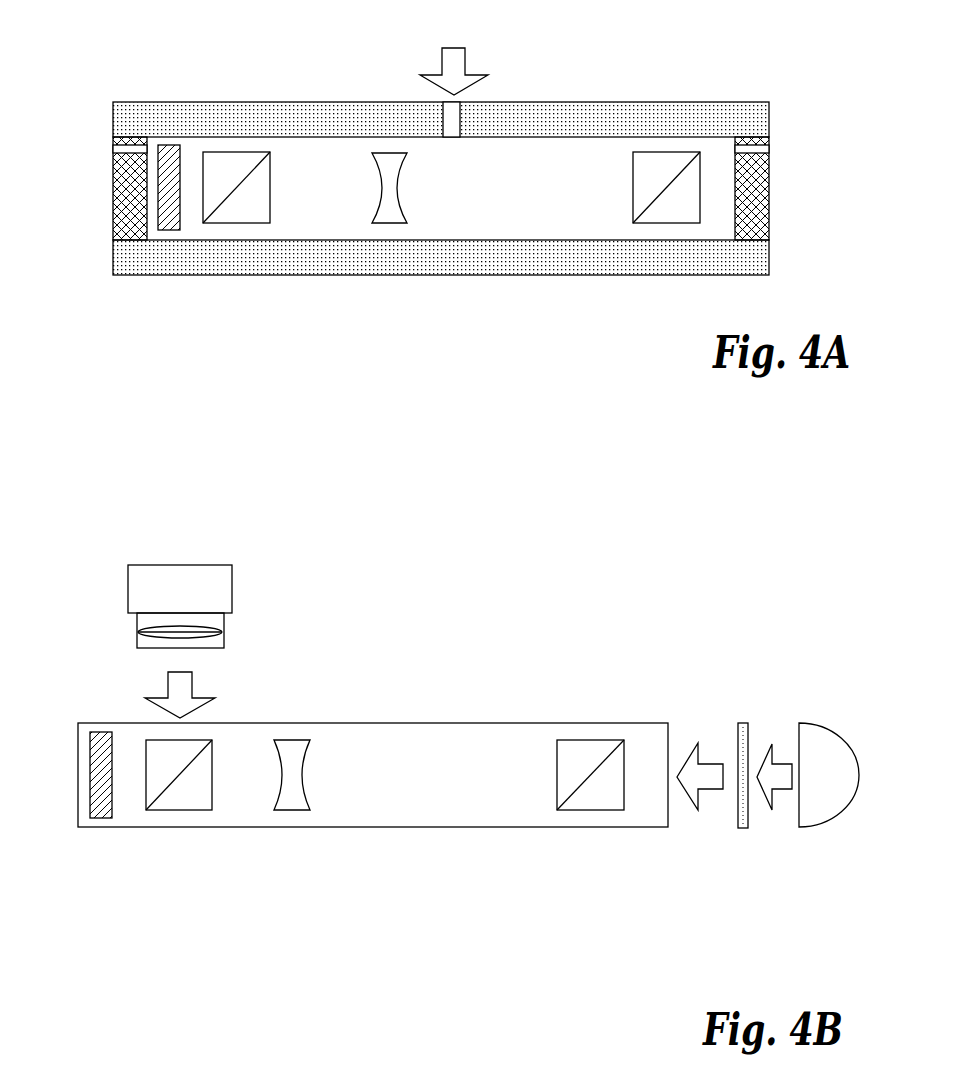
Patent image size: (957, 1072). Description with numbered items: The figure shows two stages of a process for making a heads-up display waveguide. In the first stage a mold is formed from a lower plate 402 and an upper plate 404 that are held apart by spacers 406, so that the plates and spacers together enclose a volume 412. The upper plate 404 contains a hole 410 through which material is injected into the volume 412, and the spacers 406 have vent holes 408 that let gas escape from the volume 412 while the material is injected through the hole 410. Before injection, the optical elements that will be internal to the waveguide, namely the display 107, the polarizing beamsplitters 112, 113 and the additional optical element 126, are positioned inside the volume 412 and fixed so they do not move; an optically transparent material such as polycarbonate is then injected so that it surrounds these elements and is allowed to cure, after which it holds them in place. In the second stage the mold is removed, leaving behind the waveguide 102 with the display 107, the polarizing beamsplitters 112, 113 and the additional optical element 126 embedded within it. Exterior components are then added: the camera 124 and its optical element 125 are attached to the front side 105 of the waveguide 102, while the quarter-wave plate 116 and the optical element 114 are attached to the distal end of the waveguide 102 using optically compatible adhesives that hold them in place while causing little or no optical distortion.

In FIG. 4A, the lower plate 402 is at (448, 267).
In FIG. 4A, the upper plate 404 is at (577, 117).
In FIG. 4A, the spacers 406 is at (113, 208).
In FIG. 4A, the vent holes 408 is at (113, 148).
In FIG. 4A, the hole 410 is at (452, 120).
In FIG. 4A, the volume 412 is at (557, 227).
In FIG. 4A, the display 107 is at (170, 225).
In FIG. 4B, the display 107 is at (103, 812).
In FIG. 4A, the polarizing beamsplitter 113 is at (268, 213).
In FIG. 4B, the polarizing beamsplitter 113 is at (207, 800).
In FIG. 4A, the additional optical element 126 is at (390, 177).
In FIG. 4B, the additional optical element 126 is at (298, 762).
In FIG. 4A, the polarizing beamsplitter 112 is at (637, 182).
In FIG. 4B, the polarizing beamsplitter 112 is at (566, 761).
In FIG. 4B, the camera 124 is at (180, 589).
In FIG. 4B, the optical element 125 is at (145, 634).
In FIG. 4B, the front side 105 is at (400, 723).
In FIG. 4B, the waveguide 102 is at (392, 808).
In FIG. 4B, the quarter-wave plate 116 is at (742, 732).
In FIG. 4B, the optical element 114 is at (825, 810).